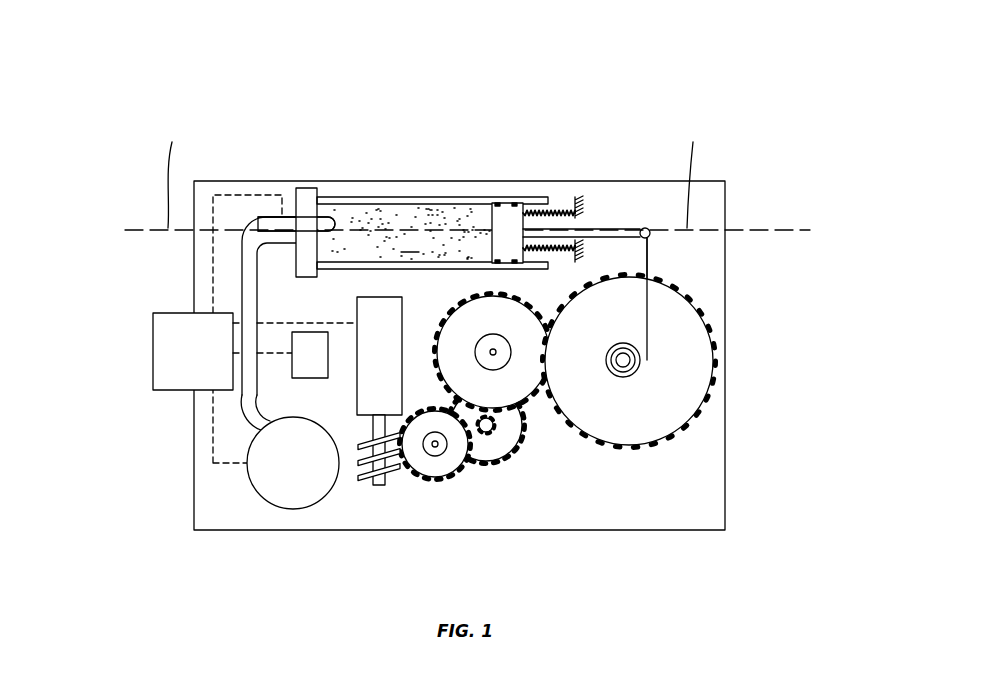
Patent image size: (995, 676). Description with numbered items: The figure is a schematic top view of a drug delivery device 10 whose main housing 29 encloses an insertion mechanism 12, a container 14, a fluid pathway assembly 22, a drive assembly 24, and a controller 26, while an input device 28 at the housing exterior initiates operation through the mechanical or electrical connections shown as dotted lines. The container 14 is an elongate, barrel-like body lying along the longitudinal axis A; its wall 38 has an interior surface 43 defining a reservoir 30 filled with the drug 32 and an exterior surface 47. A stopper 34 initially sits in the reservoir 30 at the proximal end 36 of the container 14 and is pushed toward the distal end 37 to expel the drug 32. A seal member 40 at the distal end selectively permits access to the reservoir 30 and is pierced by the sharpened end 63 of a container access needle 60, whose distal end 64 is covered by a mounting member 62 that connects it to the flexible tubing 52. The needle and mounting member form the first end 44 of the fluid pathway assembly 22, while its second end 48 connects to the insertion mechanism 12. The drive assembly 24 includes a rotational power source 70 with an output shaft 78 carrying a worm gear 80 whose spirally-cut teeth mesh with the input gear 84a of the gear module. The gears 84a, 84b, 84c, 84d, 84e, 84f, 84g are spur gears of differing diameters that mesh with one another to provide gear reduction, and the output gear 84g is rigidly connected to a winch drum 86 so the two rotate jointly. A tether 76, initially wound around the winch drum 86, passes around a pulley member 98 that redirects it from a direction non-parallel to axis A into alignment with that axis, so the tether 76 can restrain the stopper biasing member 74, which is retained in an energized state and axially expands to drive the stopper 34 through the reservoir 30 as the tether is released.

The drug delivery device 10 is at (112, 62).
The insertion mechanism 12 is at (247, 466).
The container 14 is at (501, 350).
The fluid pathway assembly 22 is at (223, 323).
The drive assembly 24 is at (501, 350).
The controller 26 is at (319, 386).
The input device 28 is at (200, 352).
The main housing 29 is at (501, 350).
The reservoir 30 is at (236, 271).
The drug 32 is at (366, 197).
The stopper 34 is at (574, 240).
The proximal end 36 is at (393, 177).
The distal end 37 is at (336, 200).
The wall 38 is at (432, 206).
The seal member 40 is at (302, 220).
The interior surface 43 is at (432, 206).
The first end 44 is at (231, 211).
The exterior surface 47 is at (432, 206).
The second end 48 is at (241, 432).
The flexible tubing 52 is at (223, 323).
The container access needle 60 is at (302, 220).
The mounting member 62 is at (266, 217).
The sharpened end 63 is at (302, 220).
The distal end 64 is at (289, 203).
The rotational power source 70 is at (399, 398).
The stopper biasing member 74 is at (508, 203).
The tether 76 is at (629, 368).
The output shaft 78 is at (399, 398).
The worm gear 80 is at (411, 303).
The gear 84a is at (461, 467).
The gear 84b is at (439, 483).
The gear 84c is at (504, 458).
The gear 84d is at (495, 431).
The gear 84e is at (494, 341).
The gear 84f is at (488, 290).
The gear 84g is at (629, 368).
The winch drum 86 is at (648, 345).
The pulley member 98 is at (574, 240).